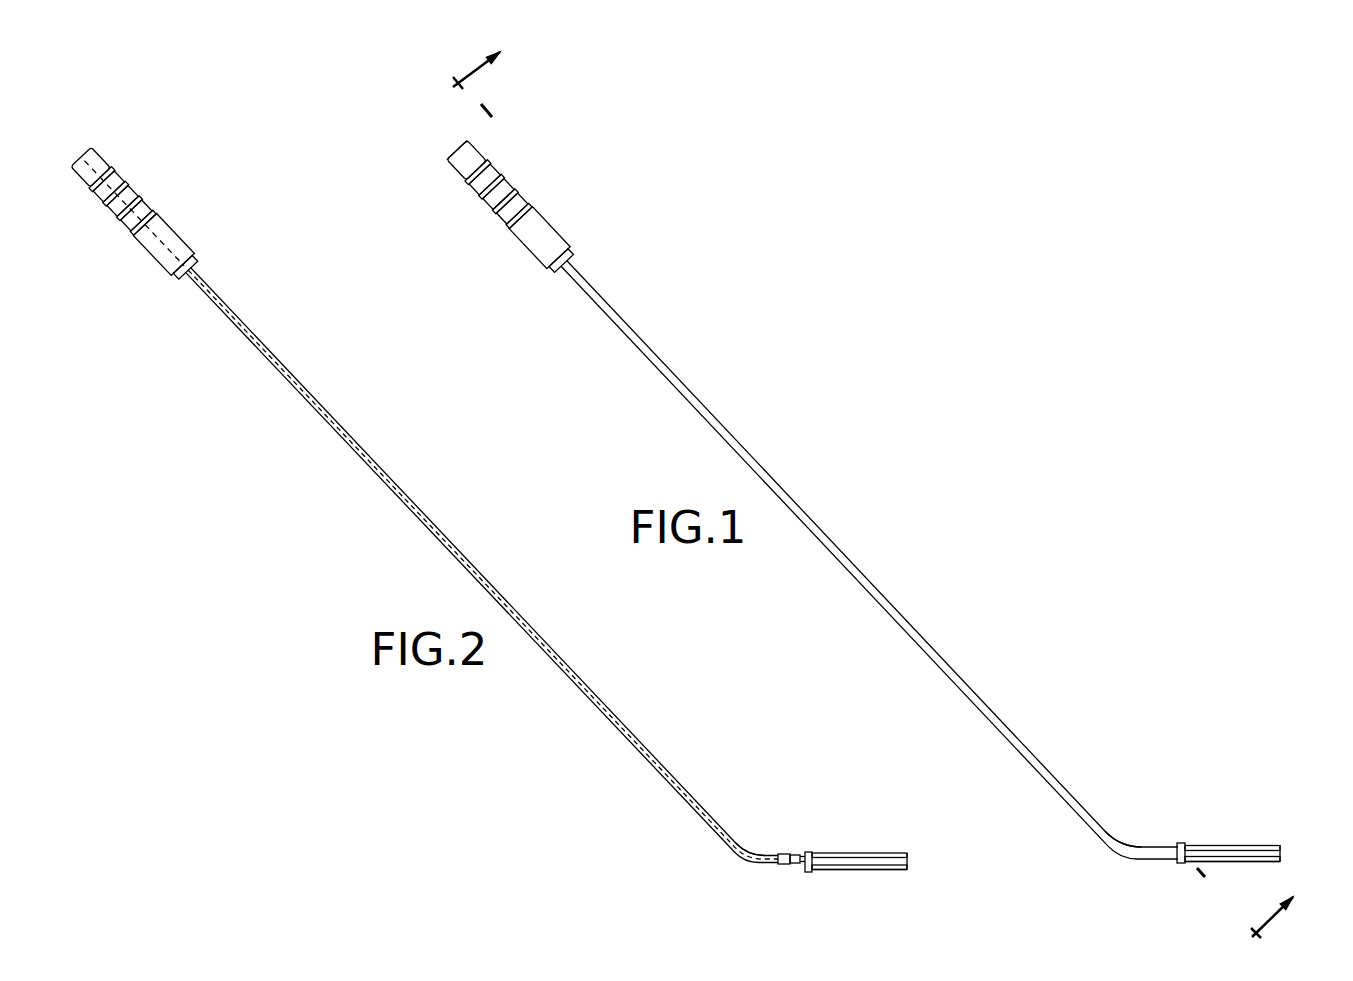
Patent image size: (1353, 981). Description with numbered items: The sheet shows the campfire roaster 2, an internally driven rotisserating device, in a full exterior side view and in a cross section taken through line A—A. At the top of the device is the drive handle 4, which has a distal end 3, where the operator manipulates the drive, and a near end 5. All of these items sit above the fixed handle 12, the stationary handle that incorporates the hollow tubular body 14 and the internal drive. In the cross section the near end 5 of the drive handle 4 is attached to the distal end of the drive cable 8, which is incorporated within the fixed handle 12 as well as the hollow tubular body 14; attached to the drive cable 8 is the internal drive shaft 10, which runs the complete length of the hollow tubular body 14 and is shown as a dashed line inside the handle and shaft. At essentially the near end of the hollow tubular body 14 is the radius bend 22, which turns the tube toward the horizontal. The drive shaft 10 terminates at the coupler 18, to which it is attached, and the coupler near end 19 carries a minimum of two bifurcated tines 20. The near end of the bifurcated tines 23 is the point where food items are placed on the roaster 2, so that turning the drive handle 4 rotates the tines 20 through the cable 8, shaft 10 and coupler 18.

In FIG. 1, the campfire roaster 2 is at (895, 509).
In FIG. 2, the campfire roaster 2 is at (491, 534).
In FIG. 1, the distal end of drive handle 3 is at (467, 160).
In FIG. 1, the drive handle 4 is at (480, 147).
In FIG. 2, the drive handle 4 is at (91, 167).
In FIG. 1, the near end of drive handle 5 is at (498, 194).
In FIG. 2, the drive cable 8 is at (122, 201).
In FIG. 2, the drive shaft 10 is at (284, 366).
In FIG. 1, the fixed handle 12 is at (542, 241).
In FIG. 2, the fixed handle 12 is at (166, 248).
In FIG. 1, the hollow tubular body 14 is at (929, 640).
In FIG. 2, the hollow tubular body 14 is at (553, 650).
In FIG. 1, the coupler 18 is at (1182, 843).
In FIG. 2, the coupler 18 is at (809, 852).
In FIG. 1, the near end of coupler 19 is at (1196, 866).
In FIG. 2, the near end of coupler 19 is at (820, 870).
In FIG. 1, the bifurcated tines 20 is at (1247, 846).
In FIG. 2, the bifurcated tines 20 is at (876, 853).
In FIG. 1, the radius bend 22 is at (1116, 860).
In FIG. 2, the radius bend 22 is at (741, 864).
In FIG. 1, the near end of bifurcated tines 23 is at (1282, 861).
In FIG. 2, the near end of bifurcated tines 23 is at (908, 862).